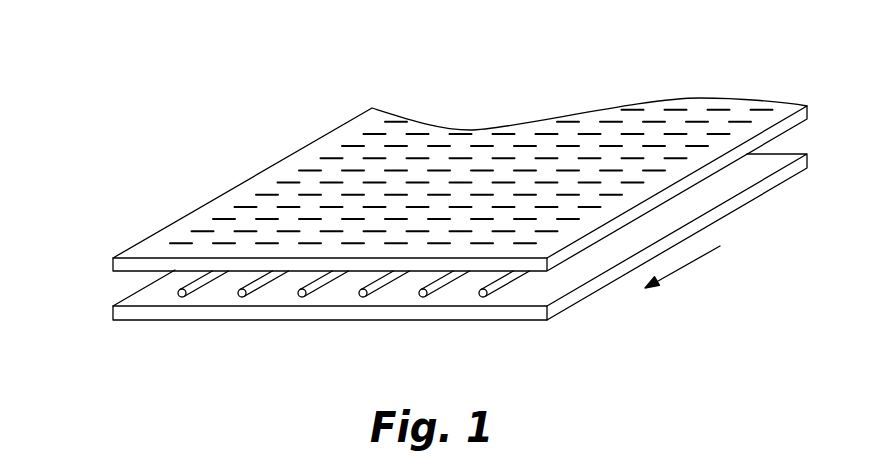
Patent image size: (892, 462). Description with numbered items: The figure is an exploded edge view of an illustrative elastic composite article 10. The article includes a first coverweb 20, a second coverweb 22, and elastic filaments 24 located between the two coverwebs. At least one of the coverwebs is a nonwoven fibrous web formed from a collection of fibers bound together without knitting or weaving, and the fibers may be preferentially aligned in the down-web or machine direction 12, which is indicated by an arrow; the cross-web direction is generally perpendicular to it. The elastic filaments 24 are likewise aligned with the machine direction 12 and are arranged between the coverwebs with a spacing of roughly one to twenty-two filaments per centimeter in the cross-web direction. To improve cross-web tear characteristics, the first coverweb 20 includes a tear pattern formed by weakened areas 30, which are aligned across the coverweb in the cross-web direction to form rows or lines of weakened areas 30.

The elastic composite article 10 is at (431, 235).
The machine direction 12 is at (685, 265).
The first coverweb 20 is at (436, 184).
The second coverweb 22 is at (125, 315).
The elastic filaments 24 is at (243, 298).
The weakened areas 30 is at (223, 216).